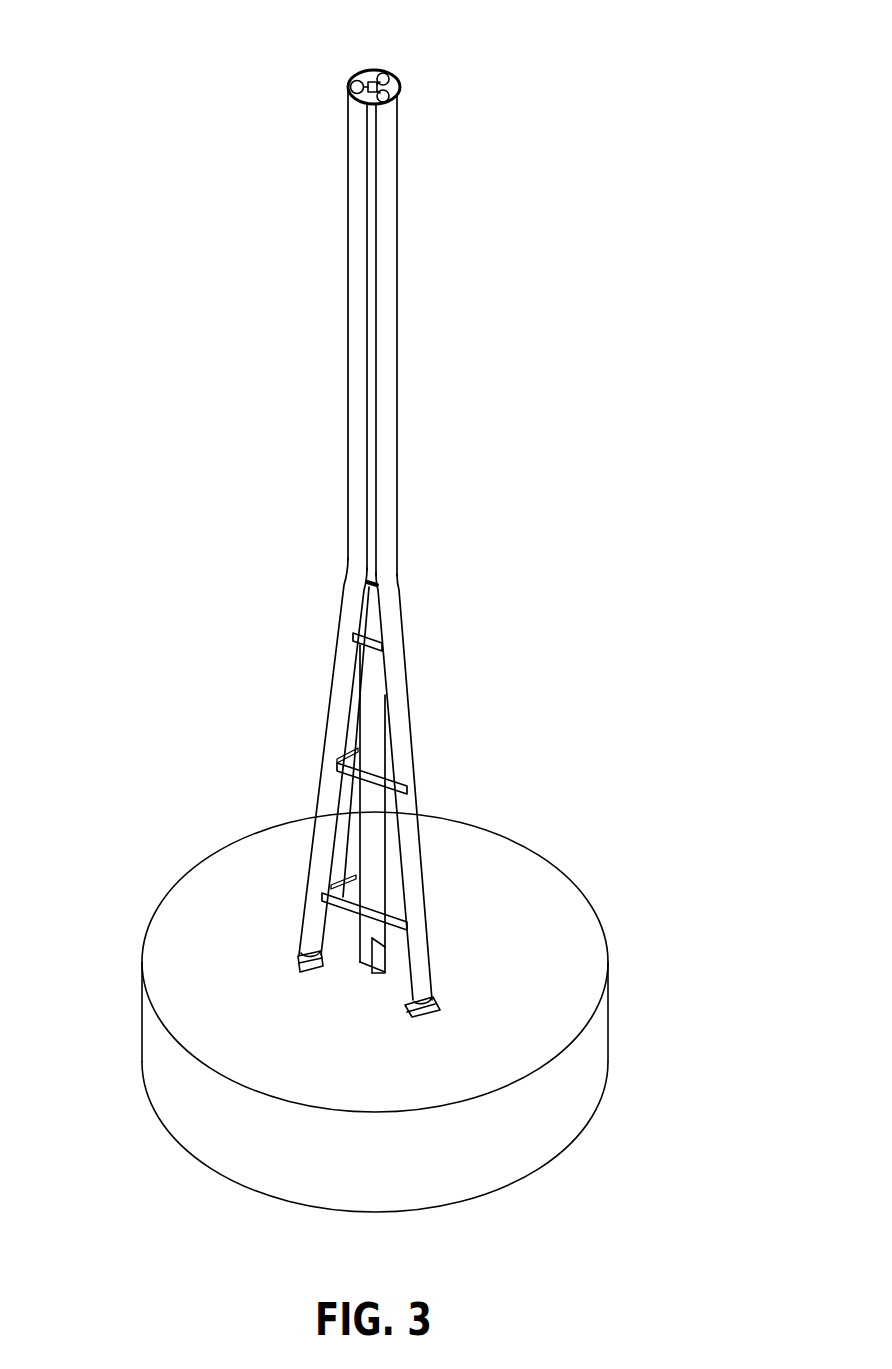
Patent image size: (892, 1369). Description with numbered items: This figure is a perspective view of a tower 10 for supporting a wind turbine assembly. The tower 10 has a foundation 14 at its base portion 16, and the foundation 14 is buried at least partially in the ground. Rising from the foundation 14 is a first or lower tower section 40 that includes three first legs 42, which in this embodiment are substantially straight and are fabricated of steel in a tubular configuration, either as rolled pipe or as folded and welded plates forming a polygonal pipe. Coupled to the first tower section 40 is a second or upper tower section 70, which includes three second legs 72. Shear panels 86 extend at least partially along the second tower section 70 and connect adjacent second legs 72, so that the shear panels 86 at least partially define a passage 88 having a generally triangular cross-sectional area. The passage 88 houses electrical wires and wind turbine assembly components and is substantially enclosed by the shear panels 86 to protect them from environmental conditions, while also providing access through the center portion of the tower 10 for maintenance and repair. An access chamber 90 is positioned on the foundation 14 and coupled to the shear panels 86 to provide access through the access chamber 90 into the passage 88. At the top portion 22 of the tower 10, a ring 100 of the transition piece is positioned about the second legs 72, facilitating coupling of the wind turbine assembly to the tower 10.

The tower 10 is at (238, 265).
The foundation 14 is at (577, 952).
The base portion 16 is at (285, 952).
The top portion 22 is at (412, 113).
The first tower section 40 is at (428, 718).
The first legs 42 is at (407, 633).
The second tower section 70 is at (467, 357).
The second legs 72 is at (398, 295).
The shear panels 86 is at (355, 72).
The passage 88 is at (380, 70).
The access chamber 90 is at (385, 945).
The ring 100 is at (403, 72).